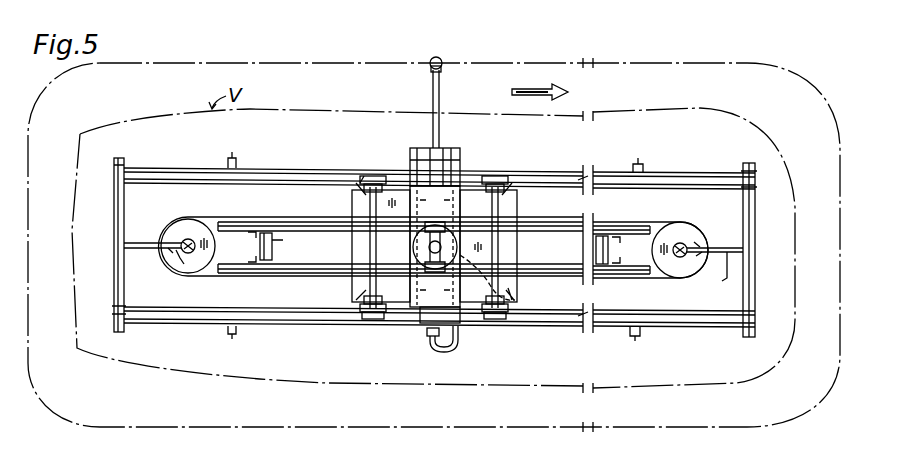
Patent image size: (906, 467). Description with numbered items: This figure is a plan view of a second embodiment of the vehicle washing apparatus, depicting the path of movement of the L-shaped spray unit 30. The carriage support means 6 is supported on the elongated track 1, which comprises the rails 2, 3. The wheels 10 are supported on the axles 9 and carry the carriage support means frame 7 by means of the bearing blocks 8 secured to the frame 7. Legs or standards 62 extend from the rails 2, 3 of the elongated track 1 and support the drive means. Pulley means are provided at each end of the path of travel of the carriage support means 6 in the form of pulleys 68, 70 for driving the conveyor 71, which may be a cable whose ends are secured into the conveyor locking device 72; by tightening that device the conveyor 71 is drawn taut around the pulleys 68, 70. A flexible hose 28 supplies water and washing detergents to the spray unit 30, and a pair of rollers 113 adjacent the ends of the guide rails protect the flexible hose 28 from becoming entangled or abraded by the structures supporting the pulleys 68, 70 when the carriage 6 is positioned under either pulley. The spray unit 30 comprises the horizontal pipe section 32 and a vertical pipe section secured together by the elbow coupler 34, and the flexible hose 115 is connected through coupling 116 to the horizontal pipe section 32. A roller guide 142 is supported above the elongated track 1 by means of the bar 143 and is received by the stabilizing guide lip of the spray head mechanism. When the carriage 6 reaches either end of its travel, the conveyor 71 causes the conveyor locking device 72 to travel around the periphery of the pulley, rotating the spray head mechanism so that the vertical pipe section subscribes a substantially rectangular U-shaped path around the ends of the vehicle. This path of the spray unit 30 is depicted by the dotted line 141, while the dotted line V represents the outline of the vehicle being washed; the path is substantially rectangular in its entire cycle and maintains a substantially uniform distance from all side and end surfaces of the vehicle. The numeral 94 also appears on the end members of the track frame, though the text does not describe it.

The dotted line 141 is at (67, 417).
The elongated track 1 is at (693, 322).
The rail 2 is at (170, 158).
The rail 3 is at (162, 321).
The carriage support means 6 is at (352, 212).
The carriage support means frame 7 is at (508, 205).
The bearing block 8 is at (360, 184).
The axle 9 is at (368, 247).
The wheel 10 is at (370, 177).
The flexible hose 28 is at (508, 292).
The L-shaped spray unit 30 is at (484, 104).
The horizontal pipe section 32 is at (440, 128).
The elbow coupler 34 is at (433, 58).
The standard 62 is at (237, 160).
The pulley 68 is at (186, 223).
The pulley 70 is at (686, 226).
The conveyor 71 is at (212, 216).
The conveyor locking device 72 is at (400, 262).
The end cross member 94 is at (114, 326).
The roller 113 is at (284, 247).
The flexible hose 115 is at (444, 352).
The coupling 116 is at (429, 337).
The roller guide 142 is at (172, 281).
The bar 143 is at (160, 244).